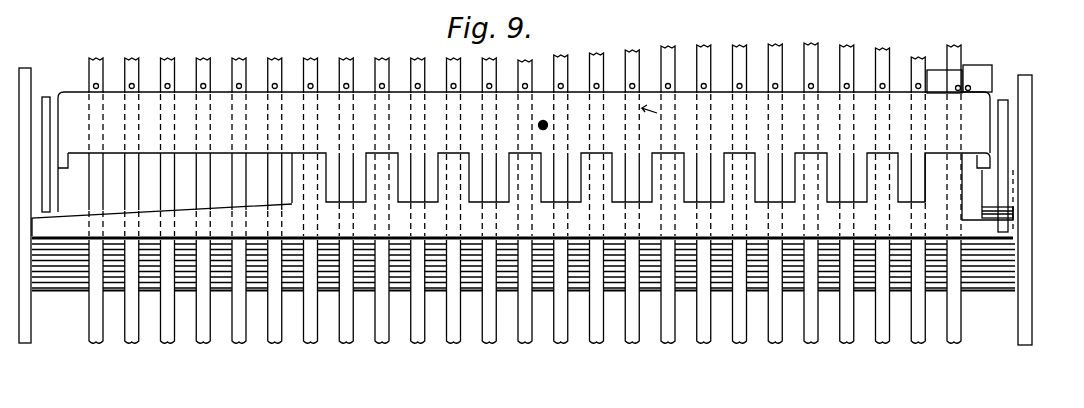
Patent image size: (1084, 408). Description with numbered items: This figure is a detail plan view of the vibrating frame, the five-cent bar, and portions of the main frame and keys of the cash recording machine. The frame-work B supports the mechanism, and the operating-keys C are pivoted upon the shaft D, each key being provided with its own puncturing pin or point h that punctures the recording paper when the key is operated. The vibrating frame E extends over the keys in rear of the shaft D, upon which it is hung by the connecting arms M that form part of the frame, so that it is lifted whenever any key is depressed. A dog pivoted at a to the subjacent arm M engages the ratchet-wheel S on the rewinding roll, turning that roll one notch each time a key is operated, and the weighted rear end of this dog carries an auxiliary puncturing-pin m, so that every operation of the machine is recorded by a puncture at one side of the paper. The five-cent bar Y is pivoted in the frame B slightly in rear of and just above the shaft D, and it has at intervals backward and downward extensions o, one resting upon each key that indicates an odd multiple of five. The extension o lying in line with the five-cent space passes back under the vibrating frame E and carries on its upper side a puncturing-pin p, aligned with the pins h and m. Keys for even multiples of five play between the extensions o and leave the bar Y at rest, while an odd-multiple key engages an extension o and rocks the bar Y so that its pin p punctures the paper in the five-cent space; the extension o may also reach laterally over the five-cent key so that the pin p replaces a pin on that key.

The puncturing pin h is at (239, 82).
The ratchet-wheel S is at (542, 118).
The vibrating frame E is at (649, 119).
The five-cent bar Y is at (310, 220).
The operating-keys C is at (516, 193).
The extensions o is at (946, 176).
The puncturing-pin p is at (958, 90).
The auxiliary puncturing-pin m is at (968, 89).
The connecting arms M is at (1000, 131).
The frame-work B is at (55, 129).
The pivot a is at (1000, 190).
The shaft D is at (1010, 258).